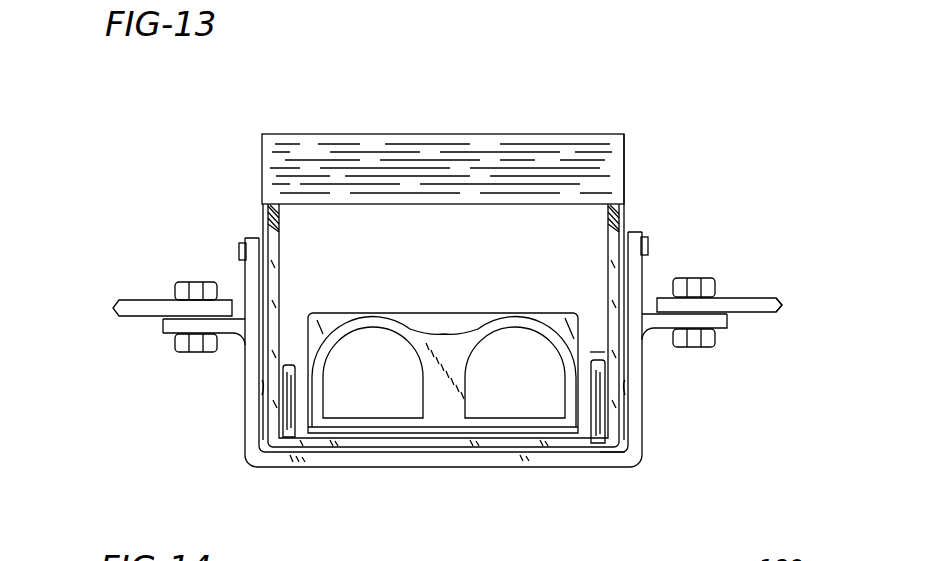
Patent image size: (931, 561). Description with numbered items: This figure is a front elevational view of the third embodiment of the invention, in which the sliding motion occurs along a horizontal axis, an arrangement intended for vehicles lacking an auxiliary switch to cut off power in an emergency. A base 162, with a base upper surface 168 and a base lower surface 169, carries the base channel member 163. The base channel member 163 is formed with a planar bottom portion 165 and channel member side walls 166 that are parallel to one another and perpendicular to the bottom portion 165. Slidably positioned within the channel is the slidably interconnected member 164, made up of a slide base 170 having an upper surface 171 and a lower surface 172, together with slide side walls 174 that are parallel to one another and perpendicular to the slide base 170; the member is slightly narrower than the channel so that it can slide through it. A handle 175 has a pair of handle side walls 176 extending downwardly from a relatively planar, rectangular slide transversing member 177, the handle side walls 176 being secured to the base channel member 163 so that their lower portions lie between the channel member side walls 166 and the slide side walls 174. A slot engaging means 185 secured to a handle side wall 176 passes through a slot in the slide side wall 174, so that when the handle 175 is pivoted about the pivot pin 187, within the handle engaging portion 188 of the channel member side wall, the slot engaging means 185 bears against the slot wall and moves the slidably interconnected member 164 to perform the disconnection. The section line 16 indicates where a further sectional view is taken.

The section line 16- 16 is at (613, 123).
The base 162 is at (112, 297).
The base channel member 163 is at (232, 430).
The slidably interconnected member 164 is at (615, 354).
The planar bottom portion 165 is at (492, 468).
The channel member side walls 166 is at (262, 390).
The base upper surface 168 is at (723, 297).
The base lower surface 169 is at (760, 313).
The slide base 170 is at (423, 448).
The upper surface 171 is at (607, 452).
The lower surface 172 is at (563, 450).
The slide side walls 174 is at (306, 410).
The handle 175 is at (645, 148).
The handle side walls 176 is at (607, 272).
The slide transversing member 177 is at (418, 150).
The slot engaging means 185 is at (610, 403).
The pivot pin 187 is at (240, 252).
The handle engaging portion 188 is at (250, 240).